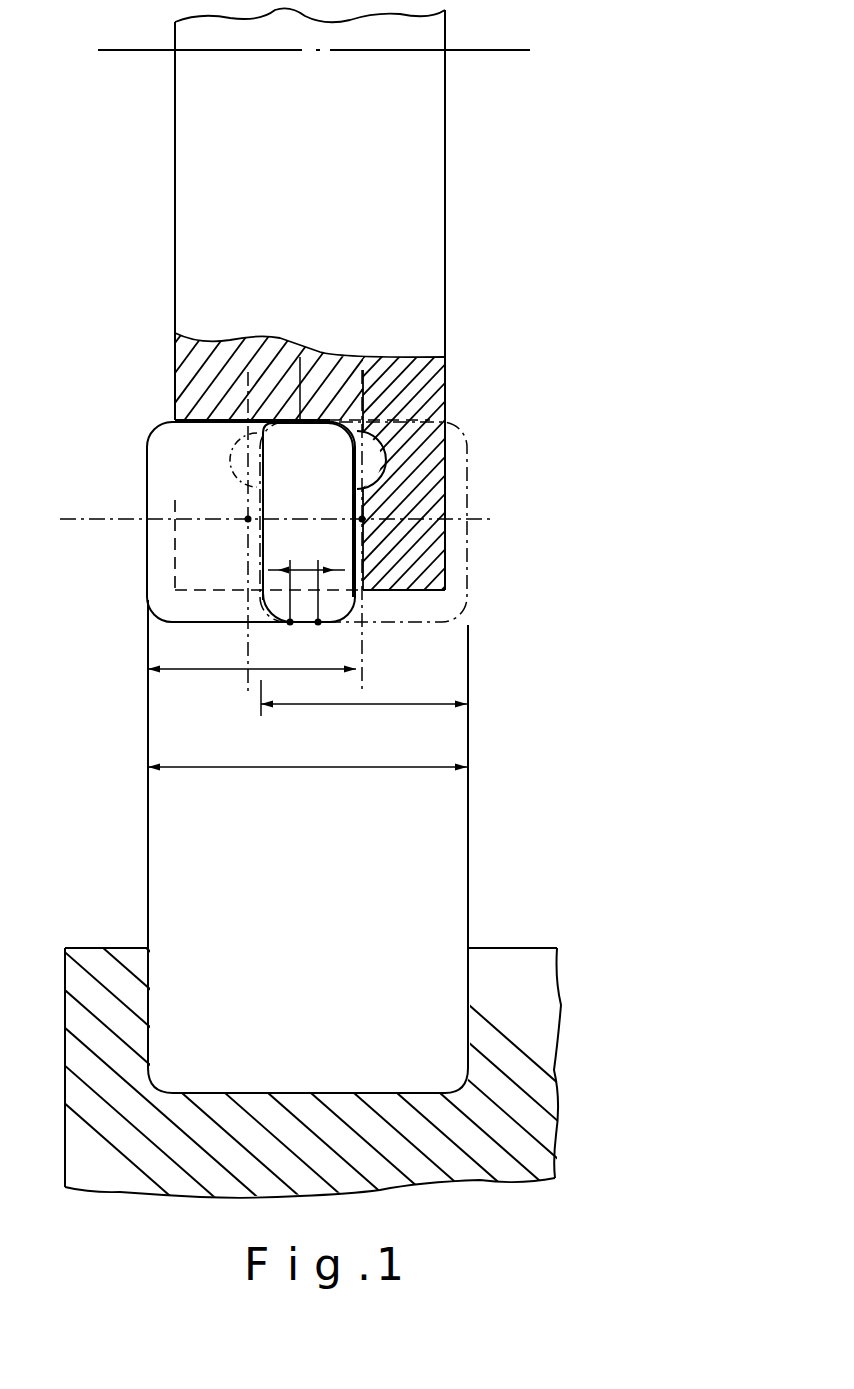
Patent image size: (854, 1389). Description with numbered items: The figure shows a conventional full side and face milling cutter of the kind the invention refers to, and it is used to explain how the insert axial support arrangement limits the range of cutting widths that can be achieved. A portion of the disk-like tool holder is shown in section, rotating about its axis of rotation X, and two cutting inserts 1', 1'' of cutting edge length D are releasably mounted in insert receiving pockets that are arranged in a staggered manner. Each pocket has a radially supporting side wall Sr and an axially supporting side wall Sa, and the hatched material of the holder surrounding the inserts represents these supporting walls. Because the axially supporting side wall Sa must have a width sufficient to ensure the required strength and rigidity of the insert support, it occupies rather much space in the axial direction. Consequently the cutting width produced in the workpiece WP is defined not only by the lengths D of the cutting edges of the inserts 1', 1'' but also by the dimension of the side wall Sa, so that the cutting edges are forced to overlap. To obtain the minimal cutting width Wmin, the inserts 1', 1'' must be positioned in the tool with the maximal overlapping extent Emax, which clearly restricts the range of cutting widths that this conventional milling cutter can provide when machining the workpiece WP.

The axis of rotation X is at (314, 29).
The radially supporting side wall Sr is at (302, 357).
The cutting insert 1' is at (230, 487).
The cutting insert 1'' is at (397, 491).
The axially supporting side wall Sa is at (507, 466).
The maximal overlapping extent Emax is at (307, 577).
The length of the cutting edges D is at (307, 676).
The minimal cutting width Wmin is at (256, 733).
The workpiece WP is at (563, 1013).